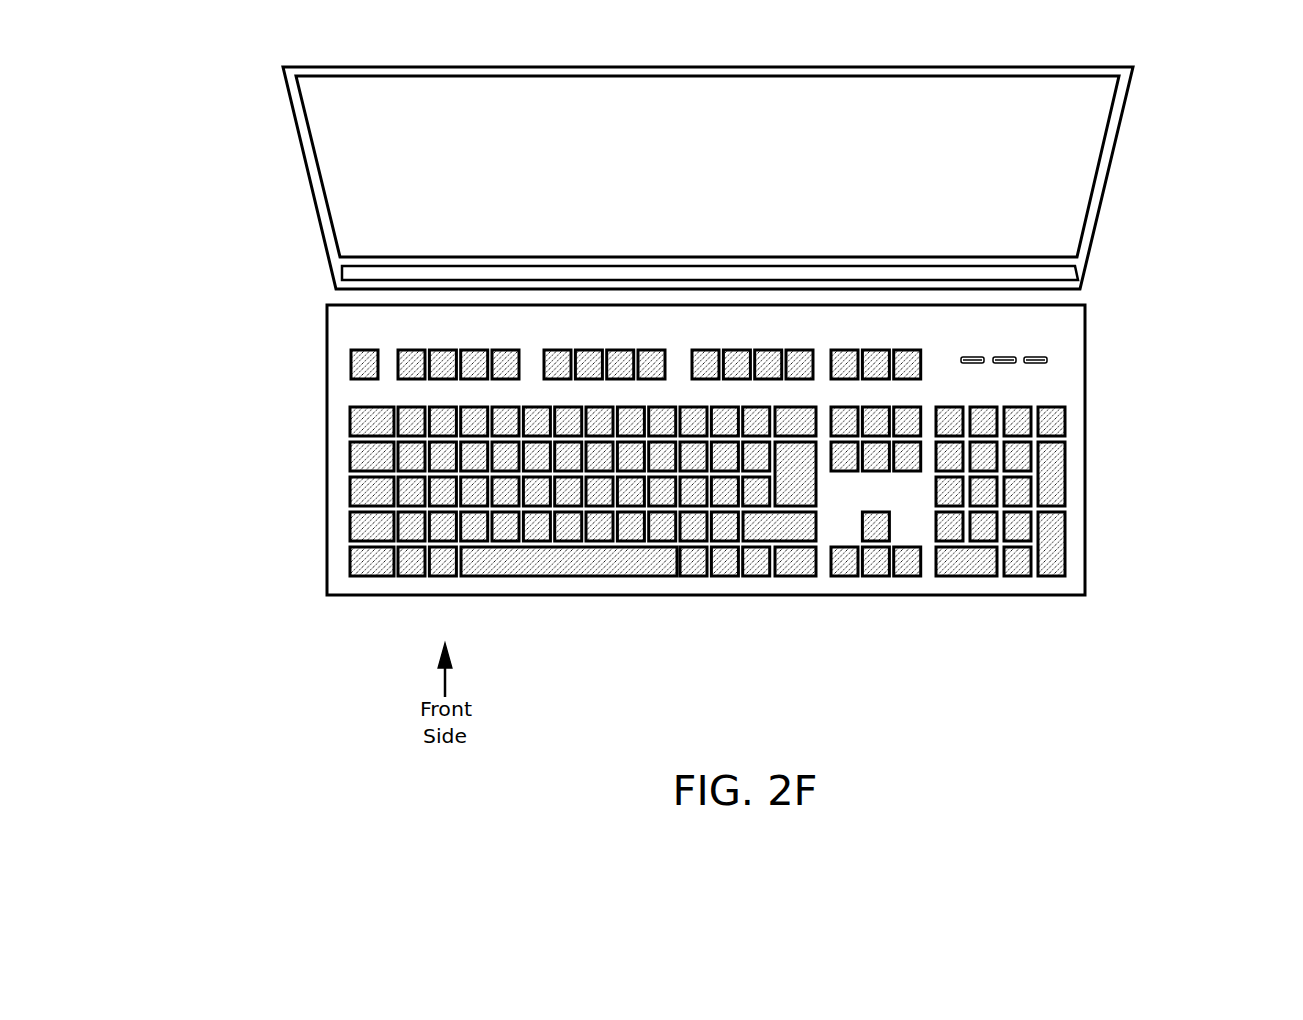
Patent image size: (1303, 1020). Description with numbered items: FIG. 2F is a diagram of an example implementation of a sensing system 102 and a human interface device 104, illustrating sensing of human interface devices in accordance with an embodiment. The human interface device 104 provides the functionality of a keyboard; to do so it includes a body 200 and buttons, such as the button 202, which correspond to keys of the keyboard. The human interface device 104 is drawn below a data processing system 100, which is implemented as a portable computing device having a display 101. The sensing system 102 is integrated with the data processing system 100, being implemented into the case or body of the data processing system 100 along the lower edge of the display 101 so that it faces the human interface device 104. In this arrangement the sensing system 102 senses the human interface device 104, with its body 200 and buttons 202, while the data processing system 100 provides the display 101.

The data processing system 100 is at (702, 192).
The display 101 is at (1100, 112).
The sensing system 102 is at (1066, 275).
The human interface device 104 is at (777, 506).
The body 200 is at (337, 595).
The button 202 is at (975, 577).